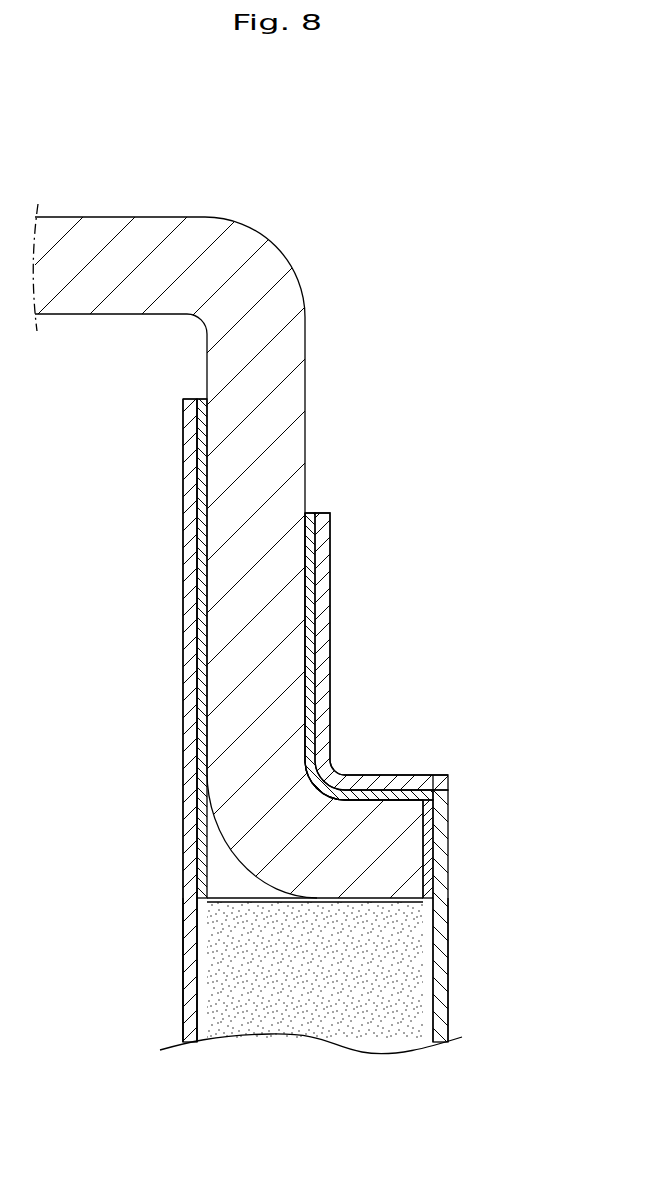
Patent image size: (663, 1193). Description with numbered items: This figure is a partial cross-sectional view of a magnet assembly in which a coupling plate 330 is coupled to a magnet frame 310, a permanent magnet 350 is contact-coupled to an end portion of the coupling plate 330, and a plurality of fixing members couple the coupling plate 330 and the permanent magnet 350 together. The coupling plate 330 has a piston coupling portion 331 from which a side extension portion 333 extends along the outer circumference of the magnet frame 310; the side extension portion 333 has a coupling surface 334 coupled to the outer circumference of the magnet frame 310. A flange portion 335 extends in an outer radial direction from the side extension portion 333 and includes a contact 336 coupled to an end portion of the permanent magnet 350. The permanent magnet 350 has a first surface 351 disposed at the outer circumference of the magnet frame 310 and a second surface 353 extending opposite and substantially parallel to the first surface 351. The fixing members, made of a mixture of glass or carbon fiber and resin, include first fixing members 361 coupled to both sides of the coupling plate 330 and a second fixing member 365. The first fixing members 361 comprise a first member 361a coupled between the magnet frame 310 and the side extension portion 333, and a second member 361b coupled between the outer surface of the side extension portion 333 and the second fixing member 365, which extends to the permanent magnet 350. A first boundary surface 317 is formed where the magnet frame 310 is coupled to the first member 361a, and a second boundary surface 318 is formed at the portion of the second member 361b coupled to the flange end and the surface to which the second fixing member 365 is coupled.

The magnet frame 310 is at (185, 619).
The first boundary surface 317 is at (197, 737).
The second boundary surface 318 is at (448, 857).
The coupling plate 330 is at (287, 235).
The piston coupling portion 331 is at (93, 226).
The side extension portion 333 is at (288, 402).
The coupling surface 334 is at (213, 661).
The flange portion 335 is at (384, 812).
The contact 336 is at (362, 897).
The permanent magnet 350 is at (318, 1018).
The first surface 351 is at (194, 961).
The second surface 353 is at (448, 966).
The first fixing members 361 is at (312, 508).
The first member 361a is at (203, 555).
The second member 361b is at (318, 560).
The second fixing member 365 is at (325, 619).